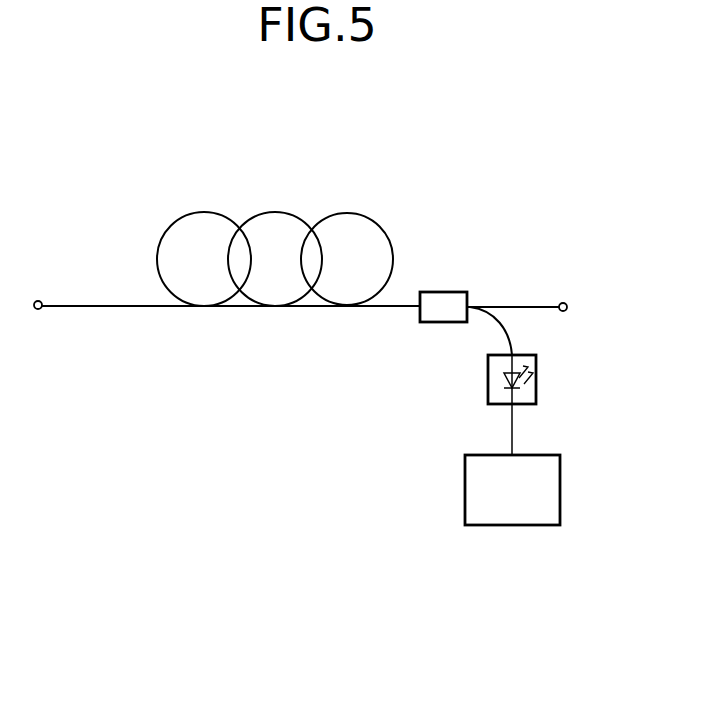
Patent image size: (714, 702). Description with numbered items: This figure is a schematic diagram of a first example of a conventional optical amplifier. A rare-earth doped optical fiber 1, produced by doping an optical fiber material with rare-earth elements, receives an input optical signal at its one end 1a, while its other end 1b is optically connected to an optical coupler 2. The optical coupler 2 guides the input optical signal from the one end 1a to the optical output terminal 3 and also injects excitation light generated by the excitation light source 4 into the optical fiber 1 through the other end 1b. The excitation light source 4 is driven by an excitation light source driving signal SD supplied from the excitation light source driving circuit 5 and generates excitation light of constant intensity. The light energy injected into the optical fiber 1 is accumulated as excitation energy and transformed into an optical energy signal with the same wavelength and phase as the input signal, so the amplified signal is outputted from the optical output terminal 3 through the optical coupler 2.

The rare-earth doped optical fiber 1 is at (283, 213).
The one end of the optical fiber 1a is at (36, 301).
The other end of the optical fiber 1b is at (419, 312).
The optical coupler 2 is at (448, 292).
The optical output terminal 3 is at (565, 301).
The excitation light source 4 is at (536, 380).
The excitation light source driving signal SD is at (529, 429).
The excitation light source driving circuit 5 is at (560, 482).